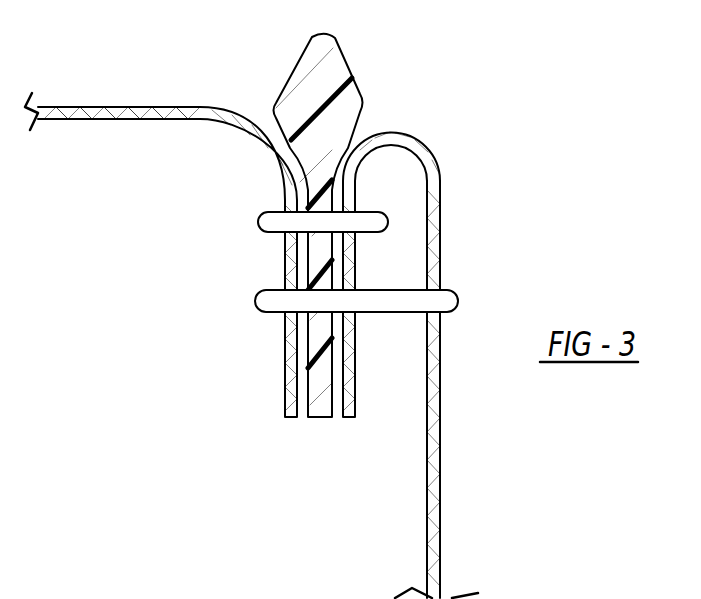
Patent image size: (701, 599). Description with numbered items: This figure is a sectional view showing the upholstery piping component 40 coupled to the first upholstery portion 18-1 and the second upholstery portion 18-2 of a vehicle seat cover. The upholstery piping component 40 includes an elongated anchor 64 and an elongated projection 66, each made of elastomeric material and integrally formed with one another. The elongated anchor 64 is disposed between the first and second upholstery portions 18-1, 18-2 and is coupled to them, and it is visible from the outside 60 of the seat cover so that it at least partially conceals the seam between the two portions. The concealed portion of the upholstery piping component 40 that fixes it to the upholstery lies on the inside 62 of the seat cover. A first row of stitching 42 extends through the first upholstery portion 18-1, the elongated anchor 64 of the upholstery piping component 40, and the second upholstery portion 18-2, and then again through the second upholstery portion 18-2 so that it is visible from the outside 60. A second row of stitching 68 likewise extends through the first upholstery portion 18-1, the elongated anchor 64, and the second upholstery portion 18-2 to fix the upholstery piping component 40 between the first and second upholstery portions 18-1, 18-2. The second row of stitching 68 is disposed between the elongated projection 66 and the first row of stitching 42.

The first upholstery portion 18-1 is at (124, 112).
The second upholstery portion 18-2 is at (435, 502).
The upholstery piping component 40 is at (320, 217).
The first row of stitching 42 is at (432, 300).
The outside 60 is at (289, 304).
The inside 62 is at (289, 323).
The elongated anchor 64 is at (319, 377).
The elongated projection 66 is at (352, 100).
The second row of stitching 68 is at (265, 222).